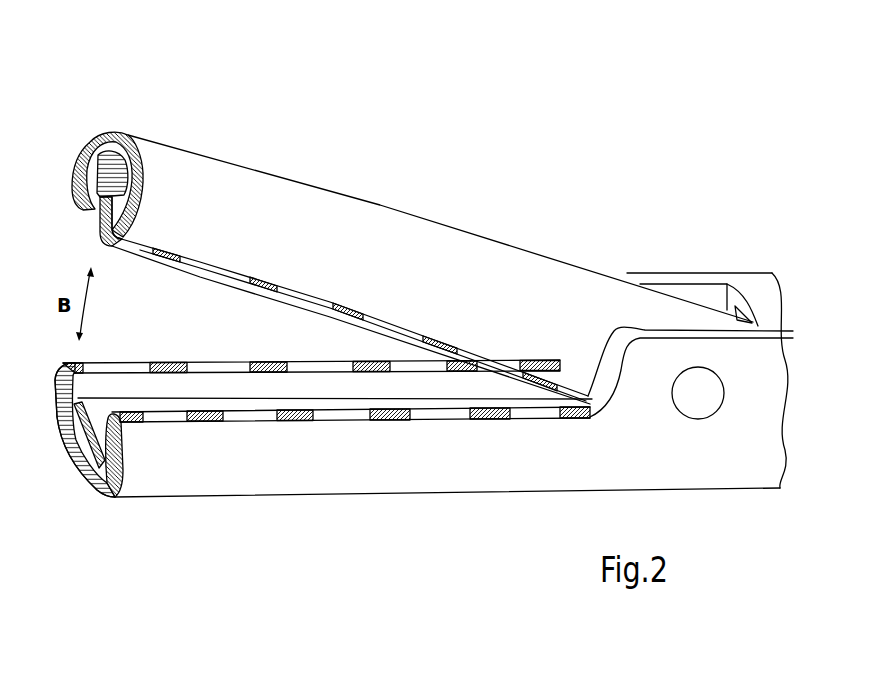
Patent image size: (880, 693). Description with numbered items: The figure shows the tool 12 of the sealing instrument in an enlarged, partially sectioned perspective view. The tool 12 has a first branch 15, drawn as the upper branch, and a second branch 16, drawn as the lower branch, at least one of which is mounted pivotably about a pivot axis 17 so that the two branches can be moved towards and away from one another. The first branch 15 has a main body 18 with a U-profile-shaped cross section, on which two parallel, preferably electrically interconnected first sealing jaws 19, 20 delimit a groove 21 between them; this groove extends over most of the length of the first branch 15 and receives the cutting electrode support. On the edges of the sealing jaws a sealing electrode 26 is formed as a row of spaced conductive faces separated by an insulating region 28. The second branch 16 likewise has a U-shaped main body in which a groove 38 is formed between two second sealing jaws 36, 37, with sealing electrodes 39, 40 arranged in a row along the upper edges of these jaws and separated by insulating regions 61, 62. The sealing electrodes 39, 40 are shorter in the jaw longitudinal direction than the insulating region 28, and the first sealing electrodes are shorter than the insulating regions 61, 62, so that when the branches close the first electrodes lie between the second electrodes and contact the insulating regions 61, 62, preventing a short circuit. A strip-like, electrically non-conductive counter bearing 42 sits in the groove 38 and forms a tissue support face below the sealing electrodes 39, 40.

The tool 12 is at (483, 118).
The first branch 15 is at (267, 150).
The second branch 16 is at (284, 532).
The pivot axis 17 is at (700, 390).
The main body 18 is at (121, 146).
The first sealing jaw 19 is at (80, 181).
The first sealing jaw 20 is at (138, 228).
The groove 21 is at (98, 200).
The sealing electrode 26 is at (398, 333).
The insulating region 28 is at (213, 264).
The second sealing jaw 36 is at (62, 406).
The second sealing jaw 37 is at (115, 446).
The groove 38 is at (337, 392).
The sealing electrode 39 is at (162, 364).
The sealing electrode 40 is at (298, 422).
The counter bearing 42 is at (90, 447).
The insulating region 61 is at (222, 364).
The insulating region 62 is at (437, 413).